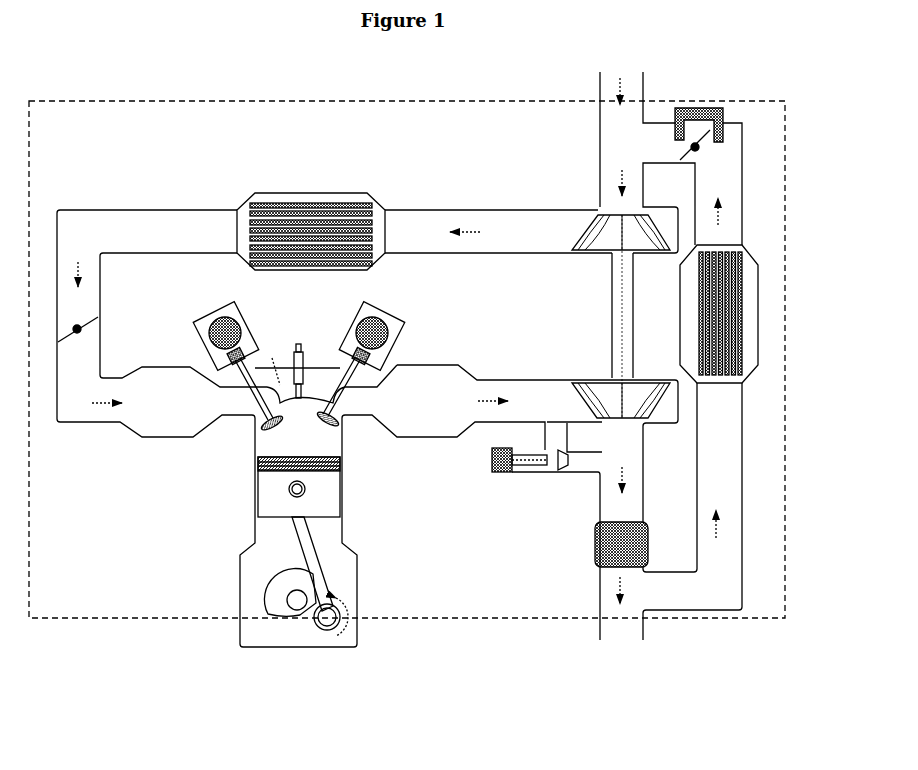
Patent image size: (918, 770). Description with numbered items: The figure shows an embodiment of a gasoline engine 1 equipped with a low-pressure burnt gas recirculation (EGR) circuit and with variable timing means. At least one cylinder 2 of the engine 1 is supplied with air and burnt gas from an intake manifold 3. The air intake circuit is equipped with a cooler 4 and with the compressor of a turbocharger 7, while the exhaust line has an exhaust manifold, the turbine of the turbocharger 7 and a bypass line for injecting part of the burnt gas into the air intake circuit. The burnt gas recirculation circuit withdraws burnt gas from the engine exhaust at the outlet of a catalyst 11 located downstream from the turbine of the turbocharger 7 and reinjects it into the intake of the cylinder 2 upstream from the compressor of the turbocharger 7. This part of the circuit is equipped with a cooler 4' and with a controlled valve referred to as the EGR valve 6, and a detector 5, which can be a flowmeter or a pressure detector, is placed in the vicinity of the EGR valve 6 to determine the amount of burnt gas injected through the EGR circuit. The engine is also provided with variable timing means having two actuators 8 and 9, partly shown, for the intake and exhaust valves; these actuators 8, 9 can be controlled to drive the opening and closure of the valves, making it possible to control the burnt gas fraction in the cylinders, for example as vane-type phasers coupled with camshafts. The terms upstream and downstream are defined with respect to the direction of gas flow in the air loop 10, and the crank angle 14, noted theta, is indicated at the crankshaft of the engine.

The gasoline engine 1 is at (278, 450).
The cylinder 2 is at (355, 493).
The intake manifold 3 is at (160, 445).
The cooler 4 is at (312, 179).
The cooler 4' is at (763, 353).
The detector 5 is at (693, 102).
The EGR valve 6 is at (712, 148).
The turbocharger 7 is at (630, 328).
The actuator 8 is at (208, 315).
The actuator 9 is at (385, 315).
The air loop 10 is at (512, 622).
The catalyst 11 is at (593, 558).
The crank angle 14 is at (262, 604).